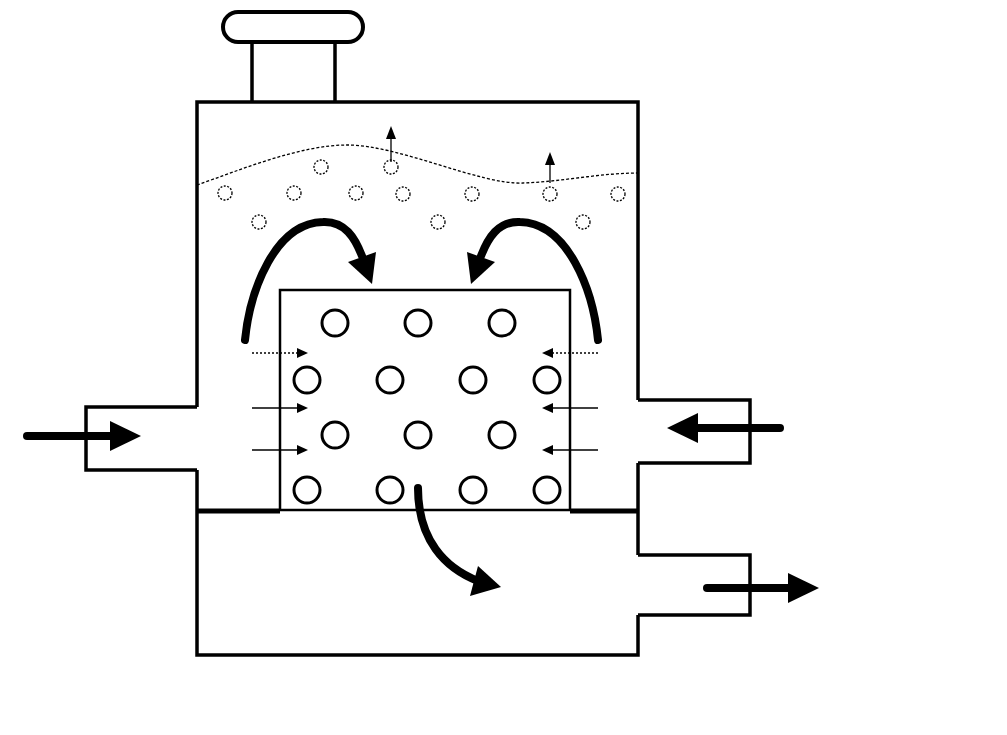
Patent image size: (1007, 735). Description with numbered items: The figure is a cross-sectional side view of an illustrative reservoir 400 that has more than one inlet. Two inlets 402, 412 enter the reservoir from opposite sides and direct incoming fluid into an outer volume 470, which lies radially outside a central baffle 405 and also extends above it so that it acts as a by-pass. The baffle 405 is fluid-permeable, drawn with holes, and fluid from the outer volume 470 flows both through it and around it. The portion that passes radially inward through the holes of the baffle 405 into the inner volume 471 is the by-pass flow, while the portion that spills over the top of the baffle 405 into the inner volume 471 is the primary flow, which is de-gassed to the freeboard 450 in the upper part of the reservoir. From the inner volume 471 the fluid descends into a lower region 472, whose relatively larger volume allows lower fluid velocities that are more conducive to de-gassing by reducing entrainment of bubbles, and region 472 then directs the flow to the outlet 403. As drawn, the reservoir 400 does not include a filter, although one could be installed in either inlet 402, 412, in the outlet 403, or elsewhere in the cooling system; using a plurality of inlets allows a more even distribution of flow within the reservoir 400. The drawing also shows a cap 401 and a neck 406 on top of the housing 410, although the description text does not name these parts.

The reservoir 400 is at (539, 22).
The cap 401 is at (223, 31).
The inlet 402 is at (692, 400).
The outlet 403 is at (697, 615).
The baffle 405 is at (565, 488).
The neck 406 is at (252, 83).
The housing 410 is at (638, 228).
The inlet 412 is at (130, 407).
The freeboard 450 is at (620, 131).
The outer volume 470 is at (236, 489).
The inner volume 471 is at (400, 354).
The region 472 is at (332, 596).